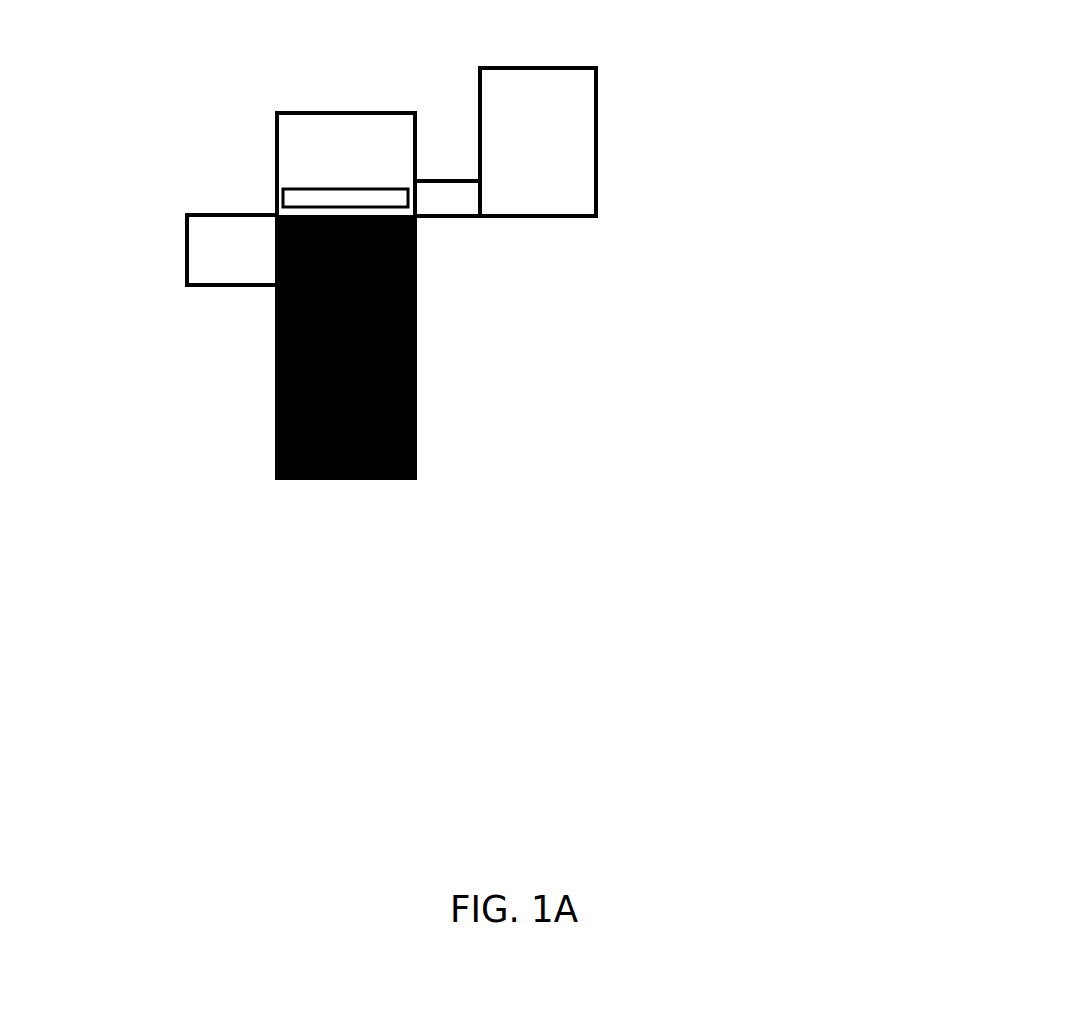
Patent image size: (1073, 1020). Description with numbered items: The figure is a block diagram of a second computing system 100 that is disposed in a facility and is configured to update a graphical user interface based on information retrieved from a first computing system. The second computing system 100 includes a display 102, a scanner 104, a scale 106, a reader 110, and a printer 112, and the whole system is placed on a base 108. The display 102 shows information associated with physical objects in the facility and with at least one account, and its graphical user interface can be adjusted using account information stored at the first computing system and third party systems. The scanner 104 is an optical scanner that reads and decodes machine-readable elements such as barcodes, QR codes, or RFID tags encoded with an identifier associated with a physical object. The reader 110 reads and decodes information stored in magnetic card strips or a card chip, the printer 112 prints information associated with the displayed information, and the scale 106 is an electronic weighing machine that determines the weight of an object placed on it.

The second computing system 100 is at (960, 12).
The display 102 is at (277, 165).
The scanner 104 is at (283, 197).
The scale 106 is at (187, 249).
The base 108 is at (416, 345).
The reader 110 is at (447, 219).
The printer 112 is at (597, 141).